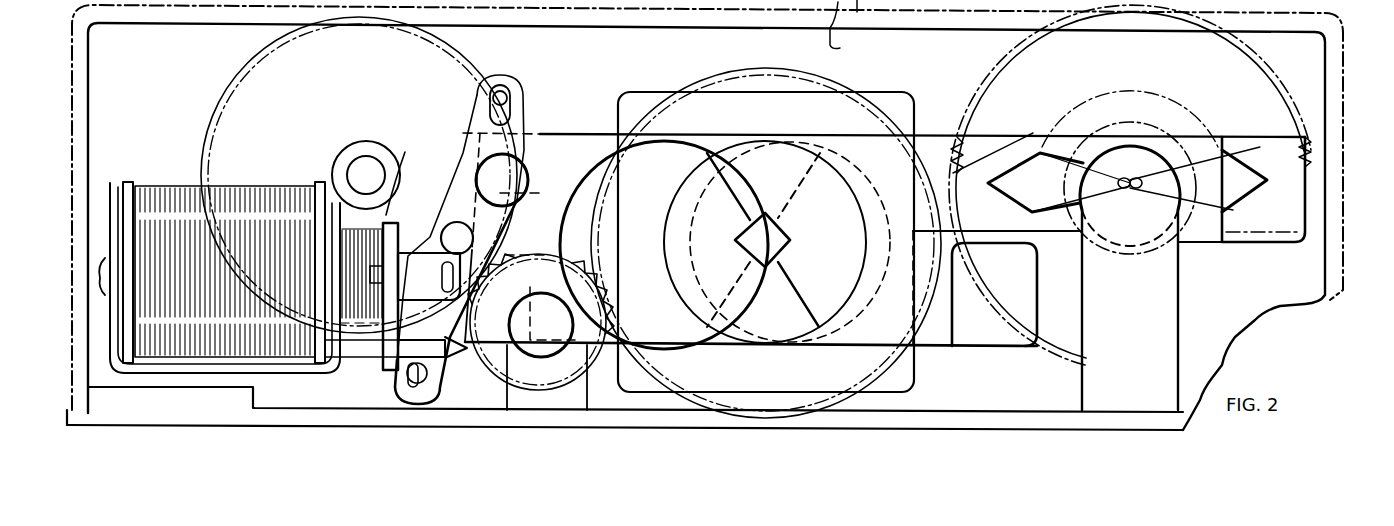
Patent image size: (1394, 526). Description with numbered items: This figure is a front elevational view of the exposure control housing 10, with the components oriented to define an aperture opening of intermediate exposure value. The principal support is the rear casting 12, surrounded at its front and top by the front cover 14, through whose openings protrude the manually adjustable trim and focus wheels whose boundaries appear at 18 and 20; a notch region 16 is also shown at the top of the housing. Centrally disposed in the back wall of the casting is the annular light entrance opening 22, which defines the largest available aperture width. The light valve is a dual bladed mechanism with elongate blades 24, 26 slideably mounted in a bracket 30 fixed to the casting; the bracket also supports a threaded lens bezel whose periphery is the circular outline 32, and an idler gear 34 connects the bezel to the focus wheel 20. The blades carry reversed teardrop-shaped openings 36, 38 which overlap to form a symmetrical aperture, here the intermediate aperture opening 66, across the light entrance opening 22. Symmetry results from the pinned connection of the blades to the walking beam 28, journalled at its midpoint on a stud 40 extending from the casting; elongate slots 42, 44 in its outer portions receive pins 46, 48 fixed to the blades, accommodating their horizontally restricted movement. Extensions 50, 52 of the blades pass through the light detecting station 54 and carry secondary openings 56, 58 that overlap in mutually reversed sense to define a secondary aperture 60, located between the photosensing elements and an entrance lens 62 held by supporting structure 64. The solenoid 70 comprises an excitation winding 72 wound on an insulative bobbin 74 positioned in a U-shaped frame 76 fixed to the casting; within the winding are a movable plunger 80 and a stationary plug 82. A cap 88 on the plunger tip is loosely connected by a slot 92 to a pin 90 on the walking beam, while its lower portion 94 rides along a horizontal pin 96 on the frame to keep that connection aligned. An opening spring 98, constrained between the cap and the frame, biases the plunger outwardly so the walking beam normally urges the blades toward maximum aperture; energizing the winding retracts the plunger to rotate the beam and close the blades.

The exposure control housing 10 is at (1270, 334).
The rear casting 12 is at (1175, 424).
The front cover 14 is at (1335, 22).
The notch 16 is at (848, 28).
The trim wheel 18 is at (1270, 68).
The focus wheel 20 is at (470, 47).
The light entrance opening 22 is at (790, 140).
The blade 24 is at (940, 338).
The blade 26 is at (1012, 334).
The walking beam 28 is at (472, 135).
The bracket 30 is at (875, 92).
The bezel 32 is at (722, 72).
The idler gear 34 is at (618, 366).
The teardrop-shaped opening 36 is at (665, 143).
The teardrop-shaped opening 38 is at (873, 146).
The stud 40 is at (512, 168).
The elongate slot 42 is at (444, 372).
The elongate slot 44 is at (512, 115).
The pin 46 is at (445, 392).
The pin 48 is at (505, 94).
The extension 50 is at (997, 233).
The extension 52 is at (1262, 236).
The light detecting station 54 is at (1350, 155).
The secondary opening 56 is at (1040, 152).
The secondary opening 58 is at (1258, 150).
The secondary aperture opening 60 is at (1133, 180).
The lens 62 is at (1128, 242).
The supporting structure 64 is at (1180, 360).
The aperture opening 66 is at (777, 250).
The solenoid 70 is at (218, 237).
The excitation winding 72 is at (155, 186).
The bobbin 74 is at (130, 180).
The U-shaped frame 76 is at (232, 378).
The plunger 80 is at (366, 160).
The plug 82 is at (104, 256).
The cap 88 is at (405, 172).
The pin 90 is at (455, 238).
The slot 92 is at (440, 253).
The lower portion of cap 94 is at (385, 370).
The pin 96 is at (362, 345).
The opening spring 98 is at (353, 162).